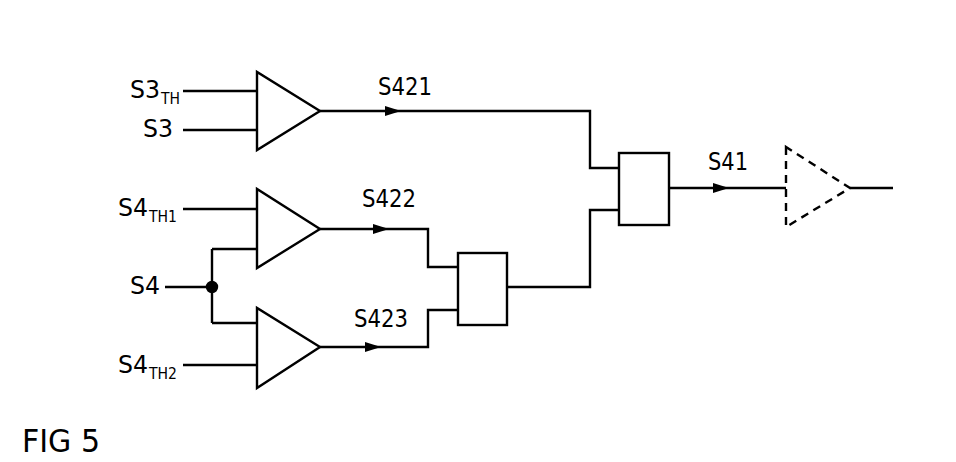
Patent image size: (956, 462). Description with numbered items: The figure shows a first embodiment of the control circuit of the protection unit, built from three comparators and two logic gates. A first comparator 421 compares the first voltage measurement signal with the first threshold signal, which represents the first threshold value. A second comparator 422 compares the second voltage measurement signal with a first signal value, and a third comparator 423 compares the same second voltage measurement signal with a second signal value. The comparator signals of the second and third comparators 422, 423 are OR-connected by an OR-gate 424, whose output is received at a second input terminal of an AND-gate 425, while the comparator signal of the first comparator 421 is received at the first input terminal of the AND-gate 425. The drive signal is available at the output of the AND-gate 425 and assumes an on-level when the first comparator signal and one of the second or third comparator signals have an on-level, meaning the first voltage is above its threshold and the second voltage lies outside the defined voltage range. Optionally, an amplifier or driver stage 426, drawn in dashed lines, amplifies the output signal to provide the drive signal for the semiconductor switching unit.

The first comparator 421 is at (288, 88).
The second comparator 422 is at (284, 204).
The third comparator 423 is at (283, 320).
The OR-gate 424 is at (470, 252).
The AND-gate 425 is at (641, 151).
The amplifier or driver stage 426 is at (801, 156).